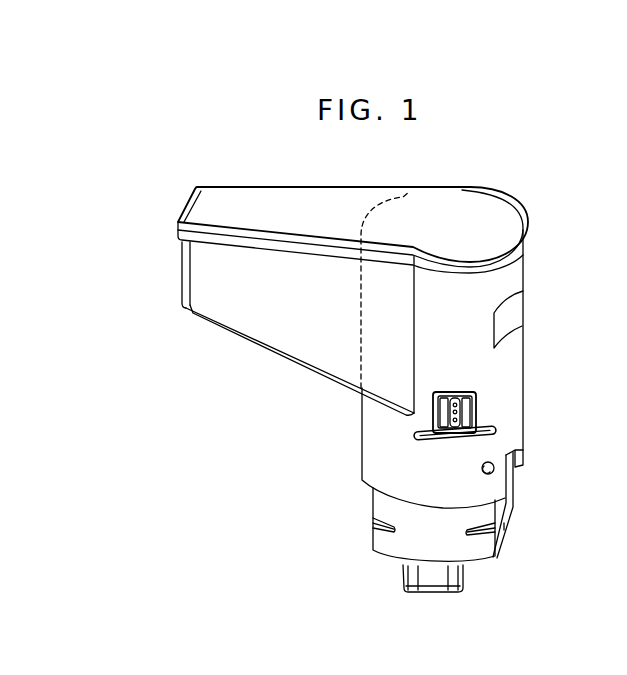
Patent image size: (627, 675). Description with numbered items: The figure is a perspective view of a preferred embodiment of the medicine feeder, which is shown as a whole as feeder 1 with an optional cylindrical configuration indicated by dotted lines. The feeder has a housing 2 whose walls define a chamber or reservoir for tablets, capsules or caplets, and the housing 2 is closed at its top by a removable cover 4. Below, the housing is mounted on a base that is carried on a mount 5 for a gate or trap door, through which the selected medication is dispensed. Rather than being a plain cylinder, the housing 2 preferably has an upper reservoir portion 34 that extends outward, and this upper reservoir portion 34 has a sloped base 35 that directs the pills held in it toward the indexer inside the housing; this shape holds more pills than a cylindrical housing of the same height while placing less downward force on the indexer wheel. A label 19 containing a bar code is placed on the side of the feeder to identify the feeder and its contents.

The device 1 is at (168, 264).
The housing 2 is at (503, 365).
The removable cover 4 is at (441, 230).
The mount 5 is at (500, 509).
The label 19 is at (512, 320).
The upper reservoir portion 34 is at (252, 300).
The sloped base 35 is at (288, 364).